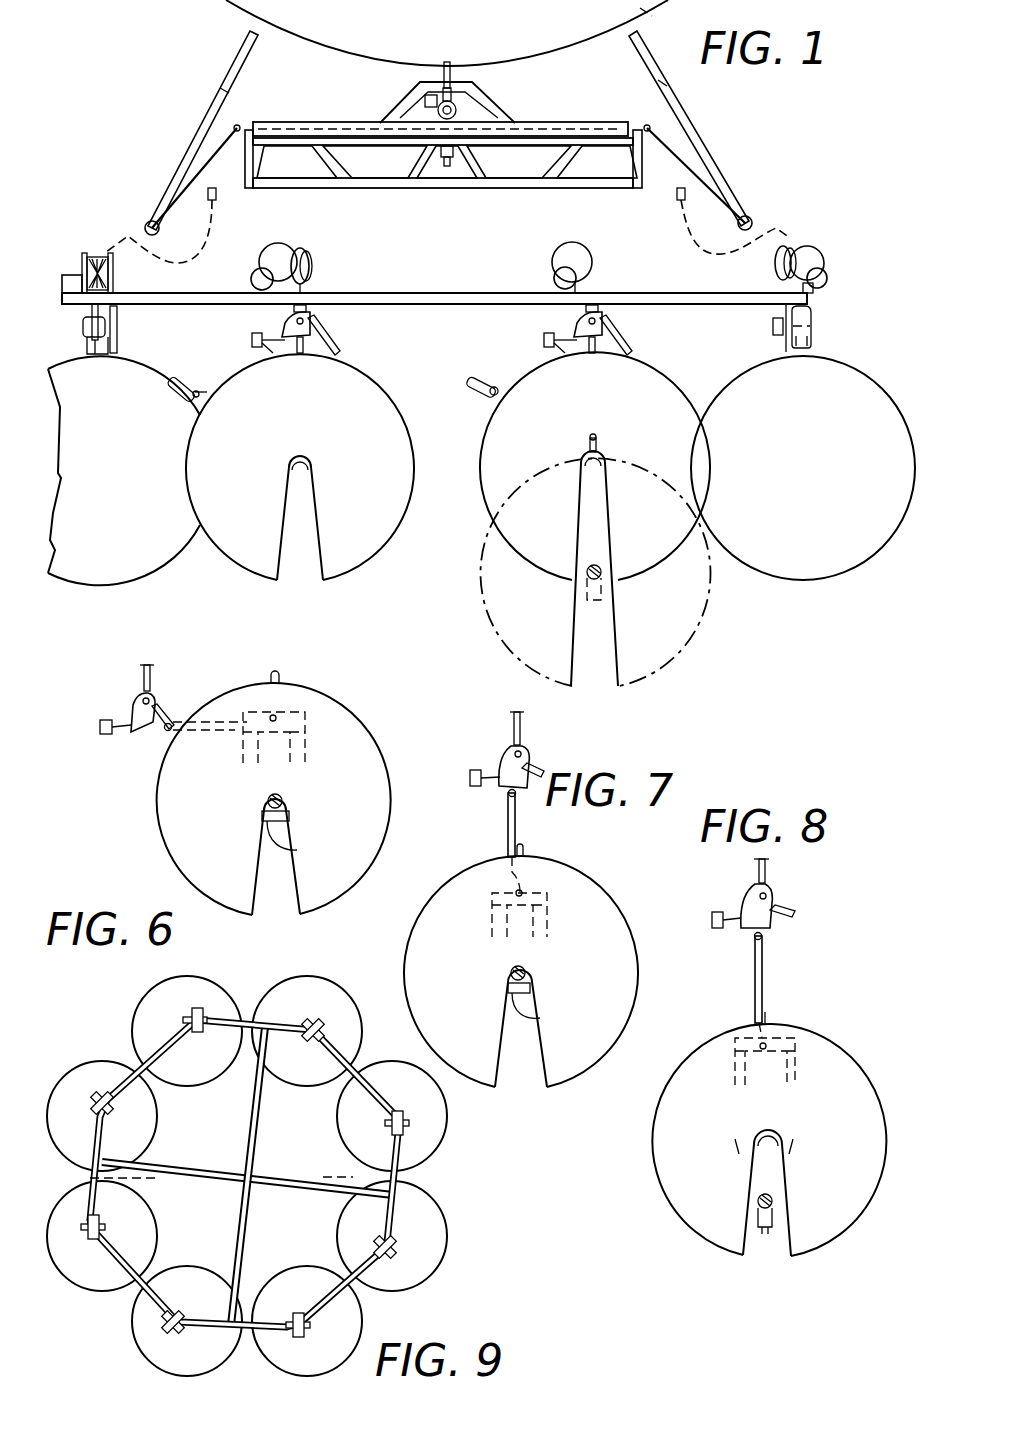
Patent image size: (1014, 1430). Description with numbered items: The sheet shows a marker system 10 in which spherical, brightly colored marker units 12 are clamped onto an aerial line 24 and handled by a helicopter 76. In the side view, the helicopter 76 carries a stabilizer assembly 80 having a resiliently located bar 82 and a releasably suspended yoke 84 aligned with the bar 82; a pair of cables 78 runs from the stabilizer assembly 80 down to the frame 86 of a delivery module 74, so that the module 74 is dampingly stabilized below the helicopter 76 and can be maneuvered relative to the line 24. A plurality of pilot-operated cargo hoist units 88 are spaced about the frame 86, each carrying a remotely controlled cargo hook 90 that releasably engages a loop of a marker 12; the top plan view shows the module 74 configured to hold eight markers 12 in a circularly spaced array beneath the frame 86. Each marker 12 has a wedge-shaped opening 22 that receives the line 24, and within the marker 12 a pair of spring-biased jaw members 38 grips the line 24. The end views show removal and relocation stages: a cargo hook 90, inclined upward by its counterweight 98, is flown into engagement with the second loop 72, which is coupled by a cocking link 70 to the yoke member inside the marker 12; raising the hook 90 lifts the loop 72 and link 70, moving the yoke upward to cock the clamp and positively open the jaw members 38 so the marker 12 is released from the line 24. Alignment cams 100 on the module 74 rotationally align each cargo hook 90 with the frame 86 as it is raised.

In FIG. 1, the marker system 10 is at (481, 343).
In FIG. 1, the marker unit 12 is at (152, 360).
In FIG. 6, the marker unit 12 is at (165, 850).
In FIG. 7, the marker unit 12 is at (586, 872).
In FIG. 8, the marker unit 12 is at (830, 1038).
In FIG. 9, the marker unit 12 is at (220, 1088).
In FIG. 1, the wedge-shaped opening 22 is at (608, 551).
In FIG. 1, the line 24 is at (603, 572).
In FIG. 6, the line 24 is at (282, 796).
In FIG. 7, the line 24 is at (527, 966).
In FIG. 8, the line 24 is at (773, 1198).
In FIG. 6, the jaw members 38 is at (296, 851).
In FIG. 7, the jaw members 38 is at (542, 1018).
In FIG. 8, the jaw members 38 is at (745, 1160).
In FIG. 6, the cocking link 70 is at (183, 720).
In FIG. 7, the cocking link 70 is at (508, 826).
In FIG. 8, the cocking link 70 is at (755, 982).
In FIG. 6, the second loop 72 is at (163, 734).
In FIG. 7, the second loop 72 is at (516, 790).
In FIG. 8, the second loop 72 is at (763, 938).
In FIG. 1, the delivery module 74 is at (812, 290).
In FIG. 1, the helicopter 76 is at (656, 20).
In FIG. 1, the cables 78 is at (205, 232).
In FIG. 9, the cables 78 is at (352, 1176).
In FIG. 1, the stabilizer assembly 80 is at (412, 190).
In FIG. 1, the bar 82 is at (255, 120).
In FIG. 1, the yoke 84 is at (550, 190).
In FIG. 1, the frame 86 is at (460, 292).
In FIG. 9, the frame 86 is at (318, 1199).
In FIG. 1, the cargo hoist units 88 is at (113, 272).
In FIG. 9, the cargo hoist units 88 is at (322, 1020).
In FIG. 1, the cargo hook 90 is at (575, 324).
In FIG. 6, the cargo hook 90 is at (128, 708).
In FIG. 7, the cargo hook 90 is at (502, 760).
In FIG. 8, the cargo hook 90 is at (773, 901).
In FIG. 6, the counterweight 98 is at (103, 736).
In FIG. 7, the counterweight 98 is at (471, 780).
In FIG. 8, the counterweight 98 is at (712, 920).
In FIG. 1, the alignment cams 100 is at (115, 340).